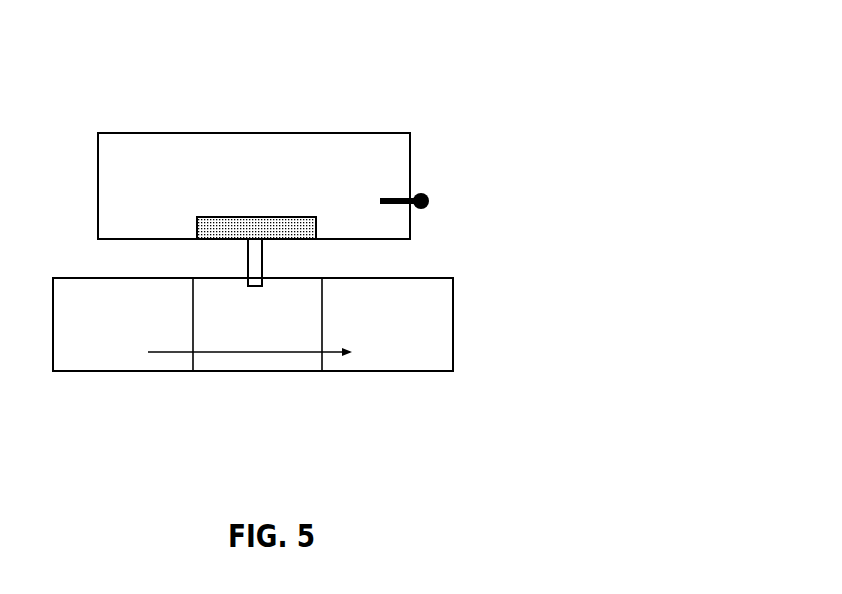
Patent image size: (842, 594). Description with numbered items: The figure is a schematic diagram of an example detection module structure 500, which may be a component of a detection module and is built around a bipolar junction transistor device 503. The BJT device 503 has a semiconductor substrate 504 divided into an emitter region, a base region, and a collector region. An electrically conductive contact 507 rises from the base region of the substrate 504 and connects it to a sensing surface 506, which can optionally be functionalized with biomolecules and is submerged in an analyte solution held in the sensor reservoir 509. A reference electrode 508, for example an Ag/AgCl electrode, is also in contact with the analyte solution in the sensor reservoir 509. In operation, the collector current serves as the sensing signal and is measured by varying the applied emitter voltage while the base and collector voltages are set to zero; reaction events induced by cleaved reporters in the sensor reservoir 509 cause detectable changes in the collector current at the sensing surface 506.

The detection module structure 500 is at (187, 104).
The BJT device 503 is at (181, 402).
The semiconductor substrate 504 is at (293, 371).
The sensing surface 506 is at (295, 217).
The electrically conductive contact 507 is at (262, 252).
The reference electrode 508 is at (428, 198).
The sensor reservoir 509 is at (410, 133).